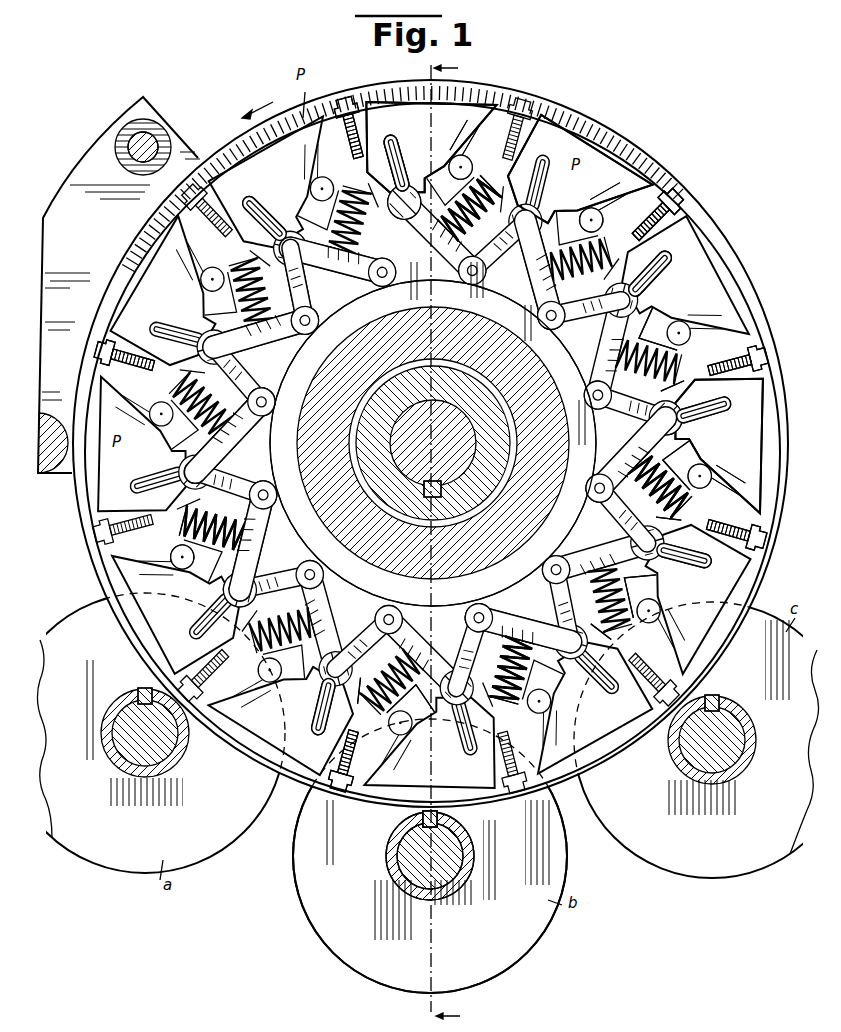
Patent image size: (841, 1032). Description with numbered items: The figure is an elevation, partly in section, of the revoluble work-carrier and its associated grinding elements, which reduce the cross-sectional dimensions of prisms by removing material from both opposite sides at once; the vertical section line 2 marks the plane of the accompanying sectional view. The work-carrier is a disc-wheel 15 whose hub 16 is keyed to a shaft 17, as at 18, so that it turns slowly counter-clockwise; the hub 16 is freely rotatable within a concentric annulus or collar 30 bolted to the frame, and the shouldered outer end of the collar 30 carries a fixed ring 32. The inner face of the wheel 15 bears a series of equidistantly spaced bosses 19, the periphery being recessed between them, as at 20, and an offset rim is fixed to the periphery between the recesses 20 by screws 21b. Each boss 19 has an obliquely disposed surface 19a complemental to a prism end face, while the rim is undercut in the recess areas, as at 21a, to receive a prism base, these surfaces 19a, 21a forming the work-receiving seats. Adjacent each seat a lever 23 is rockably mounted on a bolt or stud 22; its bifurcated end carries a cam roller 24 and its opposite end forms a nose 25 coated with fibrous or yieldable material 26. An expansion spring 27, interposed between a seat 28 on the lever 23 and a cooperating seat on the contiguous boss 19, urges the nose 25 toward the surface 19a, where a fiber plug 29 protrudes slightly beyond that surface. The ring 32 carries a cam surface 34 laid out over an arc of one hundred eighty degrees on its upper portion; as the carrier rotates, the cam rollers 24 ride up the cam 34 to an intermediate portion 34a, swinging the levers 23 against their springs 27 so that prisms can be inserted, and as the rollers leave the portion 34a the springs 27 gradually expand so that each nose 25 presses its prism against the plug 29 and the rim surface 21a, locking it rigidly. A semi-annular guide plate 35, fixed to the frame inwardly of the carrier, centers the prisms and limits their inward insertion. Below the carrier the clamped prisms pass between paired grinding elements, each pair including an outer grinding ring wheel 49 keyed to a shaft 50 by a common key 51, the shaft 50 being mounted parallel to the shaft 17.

The section line 2- 2 is at (445, 540).
The disc-wheel 15 is at (358, 262).
The hub 16 is at (484, 410).
The shaft 17 is at (455, 447).
The key 18 is at (430, 493).
The boss 19 is at (543, 458).
The obliquely disposed surface 19a is at (760, 352).
The recess 20 is at (460, 118).
The undercut rim surface 21a is at (372, 103).
The screws 21b is at (700, 190).
The bolt or stud 22 is at (396, 212).
The lever 23 is at (253, 393).
The cam roller 24 is at (306, 300).
The nose 25 is at (395, 158).
The fibrous or yieldable material 26 is at (256, 208).
The expansion spring 27 is at (492, 672).
The seat 28 is at (255, 530).
The fiber plug 29 is at (470, 165).
The annulus or collar 30 is at (483, 330).
The ring 32 is at (432, 608).
The cam surface 34 is at (354, 292).
The intermediate cam portion 34a is at (282, 365).
The semi-annular guide plate 35 is at (176, 140).
The outer grinding ring wheel 49 is at (545, 935).
The shaft 50 is at (760, 792).
The key 51 is at (718, 716).